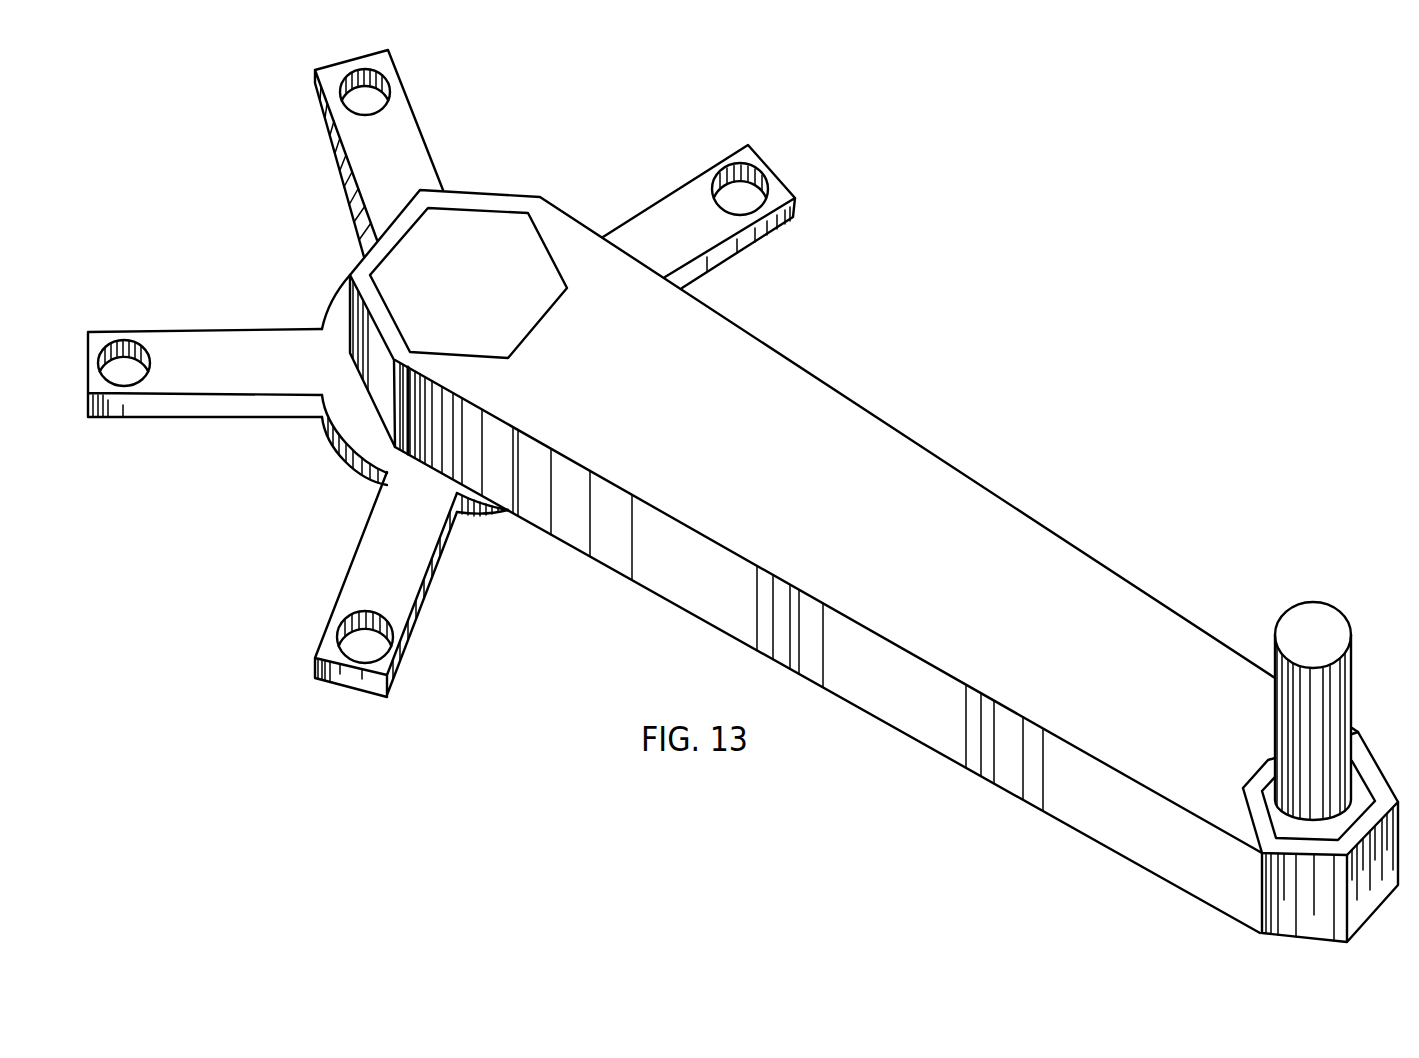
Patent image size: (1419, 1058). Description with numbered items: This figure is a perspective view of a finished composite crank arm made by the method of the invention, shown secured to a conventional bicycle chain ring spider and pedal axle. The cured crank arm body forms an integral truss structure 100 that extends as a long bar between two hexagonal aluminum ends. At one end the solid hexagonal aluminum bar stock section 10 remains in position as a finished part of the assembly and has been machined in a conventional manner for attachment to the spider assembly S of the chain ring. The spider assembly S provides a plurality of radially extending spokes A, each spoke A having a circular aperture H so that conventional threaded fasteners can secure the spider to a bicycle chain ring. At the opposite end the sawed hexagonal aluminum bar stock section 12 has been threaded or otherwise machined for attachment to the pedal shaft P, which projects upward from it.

The integral truss structure 100 is at (843, 777).
The hexagonal aluminum bar stock section 10 is at (475, 242).
The hexagonal aluminum bar stock section 12 is at (1262, 795).
The pedal shaft P is at (1297, 628).
The spider assembly S is at (360, 407).
The spokes A is at (415, 545).
The circular apertures H is at (352, 637).